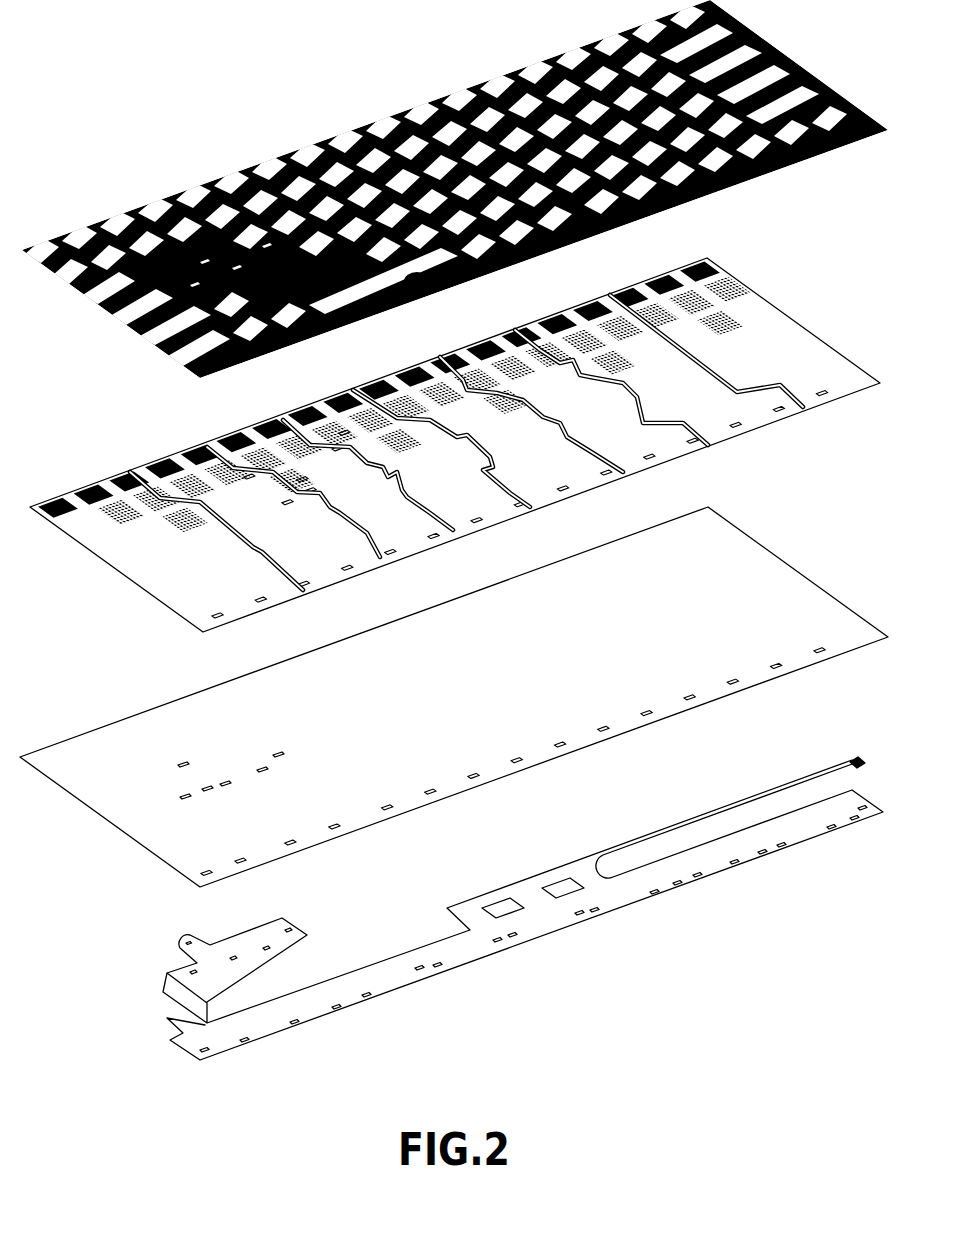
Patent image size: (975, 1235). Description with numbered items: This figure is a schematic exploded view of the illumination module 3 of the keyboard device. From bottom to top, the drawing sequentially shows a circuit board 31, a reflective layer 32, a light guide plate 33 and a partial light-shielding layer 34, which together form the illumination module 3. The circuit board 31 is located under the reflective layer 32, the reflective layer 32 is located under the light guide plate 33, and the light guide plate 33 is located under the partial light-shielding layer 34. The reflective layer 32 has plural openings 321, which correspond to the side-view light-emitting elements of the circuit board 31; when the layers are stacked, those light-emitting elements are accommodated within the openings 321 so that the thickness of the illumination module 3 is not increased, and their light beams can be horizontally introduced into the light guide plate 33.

The illumination module 3 is at (142, 122).
The circuit board 31 is at (710, 864).
The reflective layer 32 is at (777, 585).
The openings 321 is at (184, 762).
The light guide plate 33 is at (779, 323).
The partial light-shielding layer 34 is at (779, 65).